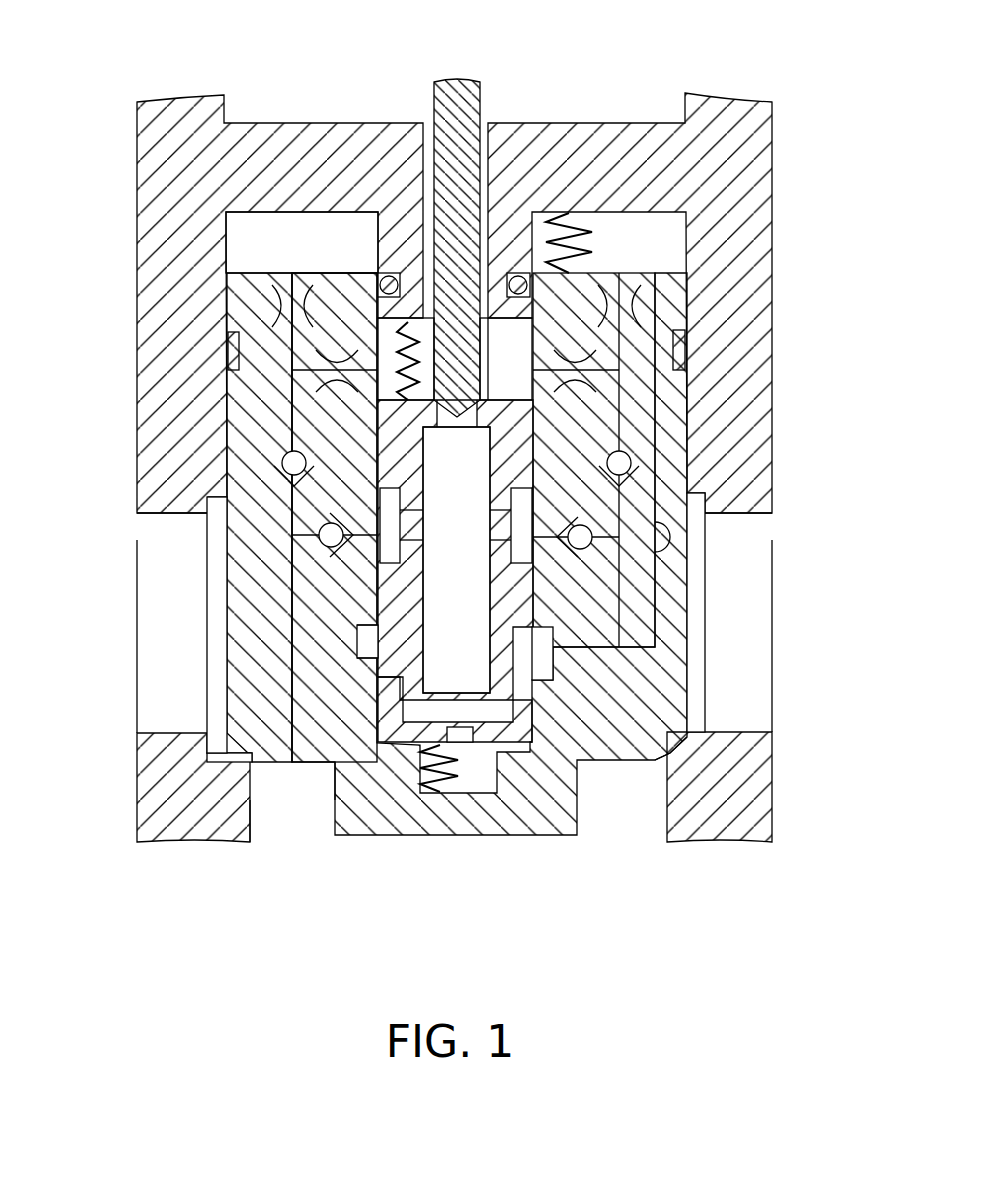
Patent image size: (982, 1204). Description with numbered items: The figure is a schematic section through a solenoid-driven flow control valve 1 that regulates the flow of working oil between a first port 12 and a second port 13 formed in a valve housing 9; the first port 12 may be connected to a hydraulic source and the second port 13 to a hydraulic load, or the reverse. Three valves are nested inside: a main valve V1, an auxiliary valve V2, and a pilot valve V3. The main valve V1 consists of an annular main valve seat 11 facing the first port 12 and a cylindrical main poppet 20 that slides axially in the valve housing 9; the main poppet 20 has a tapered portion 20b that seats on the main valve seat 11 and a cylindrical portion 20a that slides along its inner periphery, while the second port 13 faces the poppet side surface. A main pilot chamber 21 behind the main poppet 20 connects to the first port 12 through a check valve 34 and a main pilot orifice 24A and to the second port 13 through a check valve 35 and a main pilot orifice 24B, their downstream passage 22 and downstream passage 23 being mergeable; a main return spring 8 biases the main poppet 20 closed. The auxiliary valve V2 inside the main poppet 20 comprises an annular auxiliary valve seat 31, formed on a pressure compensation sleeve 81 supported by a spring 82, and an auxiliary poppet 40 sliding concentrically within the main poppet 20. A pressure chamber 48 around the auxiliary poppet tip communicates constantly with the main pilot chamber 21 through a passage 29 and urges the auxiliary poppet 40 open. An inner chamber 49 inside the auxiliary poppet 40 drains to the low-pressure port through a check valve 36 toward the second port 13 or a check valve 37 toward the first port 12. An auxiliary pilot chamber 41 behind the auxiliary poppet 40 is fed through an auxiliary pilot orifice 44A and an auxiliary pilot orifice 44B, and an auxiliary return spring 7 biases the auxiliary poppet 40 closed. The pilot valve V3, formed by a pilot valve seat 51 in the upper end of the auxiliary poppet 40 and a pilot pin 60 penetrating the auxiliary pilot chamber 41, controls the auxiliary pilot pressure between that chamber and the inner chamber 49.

The solenoid-driven flow control valve 1 is at (760, 85).
The auxiliary return spring 7 is at (417, 300).
The main return spring 8 is at (572, 212).
The valve housing 9 is at (772, 140).
The main valve seat 11 is at (640, 752).
The first port 12 is at (640, 824).
The second port 13 is at (165, 700).
The main poppet 20 is at (553, 810).
The cylindrical portion 20a is at (250, 795).
The tapered portion 20b is at (232, 757).
The main pilot chamber 21 is at (278, 255).
The downstream passage 22 is at (300, 430).
The downstream passage 23 is at (655, 460).
The main pilot orifice 24A is at (290, 308).
The main pilot orifice 24B is at (640, 295).
The passage 29 is at (680, 350).
The auxiliary valve seat 31 is at (358, 625).
The check valve 34 is at (285, 470).
The check valve 35 is at (633, 463).
The check valve 36 is at (690, 540).
The check valve 37 is at (320, 535).
The auxiliary poppet 40 is at (365, 638).
The auxiliary pilot chamber 41 is at (497, 345).
The auxiliary pilot orifice 44A is at (350, 367).
The auxiliary pilot orifice 44B is at (583, 360).
The pressure chamber 48 is at (540, 665).
The inner chamber 49 is at (442, 597).
The pilot valve seat 51 is at (458, 350).
The pilot pin 60 is at (434, 105).
The pressure compensation sleeve 81 is at (518, 732).
The spring 82 is at (462, 793).
The main valve V1 is at (293, 800).
The auxiliary valve V2 is at (356, 662).
The pilot valve V3 is at (500, 377).